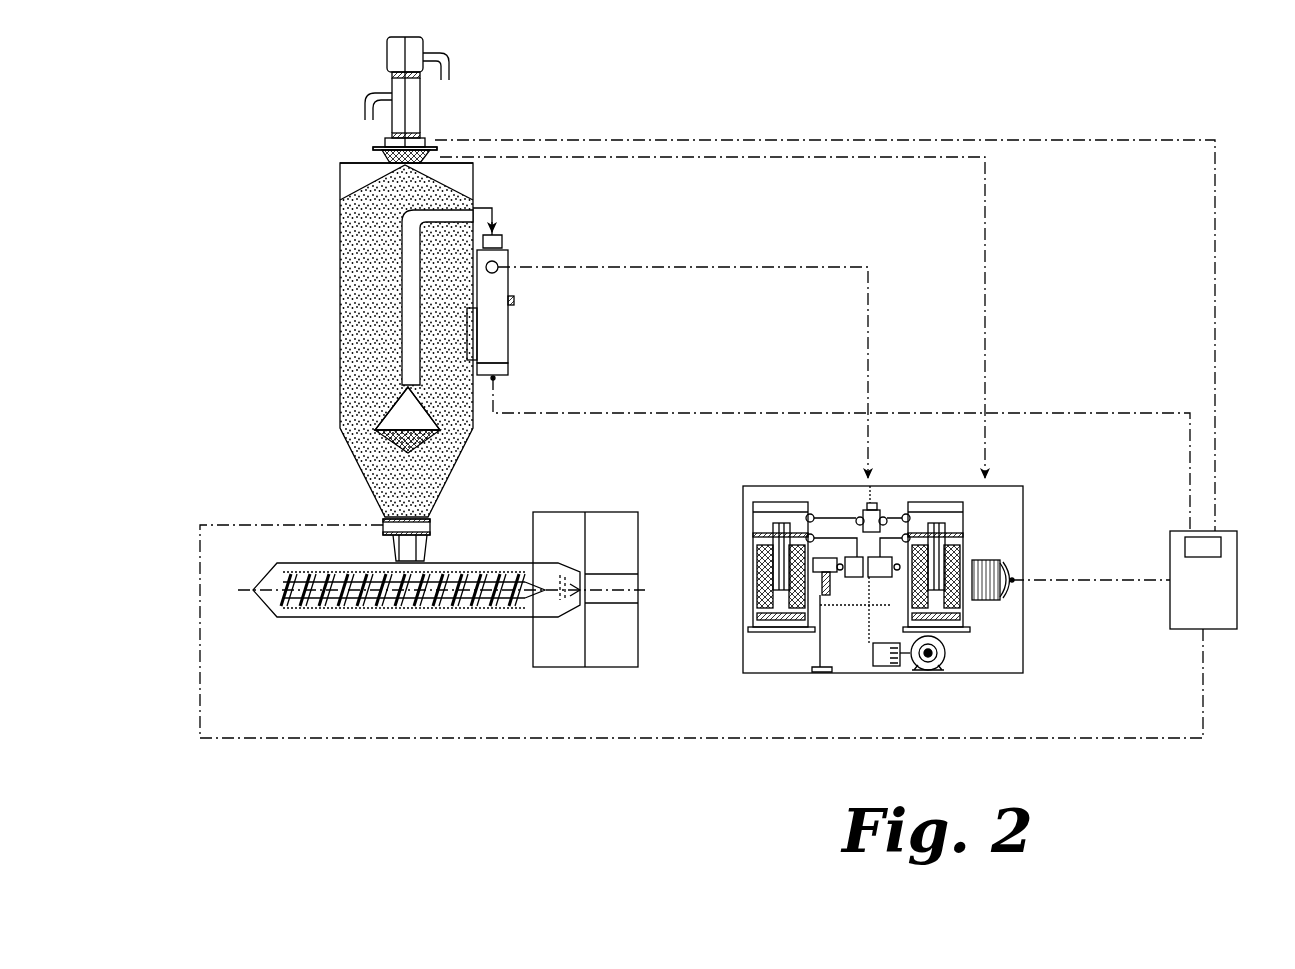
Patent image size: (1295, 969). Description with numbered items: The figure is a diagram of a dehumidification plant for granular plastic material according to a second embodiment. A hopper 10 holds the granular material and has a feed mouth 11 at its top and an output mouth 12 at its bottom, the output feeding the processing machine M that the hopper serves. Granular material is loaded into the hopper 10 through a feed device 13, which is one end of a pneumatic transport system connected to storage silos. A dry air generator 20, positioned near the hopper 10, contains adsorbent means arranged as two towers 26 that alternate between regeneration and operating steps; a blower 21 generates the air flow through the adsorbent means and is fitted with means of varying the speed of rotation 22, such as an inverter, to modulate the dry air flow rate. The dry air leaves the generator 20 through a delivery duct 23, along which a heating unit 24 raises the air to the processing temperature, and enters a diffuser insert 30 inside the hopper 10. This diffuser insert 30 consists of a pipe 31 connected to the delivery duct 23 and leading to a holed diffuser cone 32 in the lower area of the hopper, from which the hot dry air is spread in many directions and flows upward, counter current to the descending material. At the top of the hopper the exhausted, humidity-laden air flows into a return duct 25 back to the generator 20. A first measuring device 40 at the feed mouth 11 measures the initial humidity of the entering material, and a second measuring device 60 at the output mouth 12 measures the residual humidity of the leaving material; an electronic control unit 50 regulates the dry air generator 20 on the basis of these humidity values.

The hopper 10 is at (330, 312).
The feed mouth 11 is at (392, 157).
The output mouth 12 is at (392, 548).
The feed device 13 is at (427, 45).
The dry air generator 20 is at (1012, 486).
The blower 21 is at (938, 670).
The means of varying the speed of rotation 22 is at (880, 665).
The delivery duct 23 is at (690, 266).
The heating unit 24 is at (508, 345).
The return duct 25 is at (690, 158).
The towers with adsorbent means 26 is at (918, 610).
The diffuser insert 30 is at (385, 385).
The pipe 31 is at (400, 240).
The diffuser cone 32 is at (432, 440).
The first measuring device 40 is at (430, 134).
The electronic control unit 50 is at (1228, 530).
The second measuring device 60 is at (385, 522).
The processing machine M is at (405, 632).